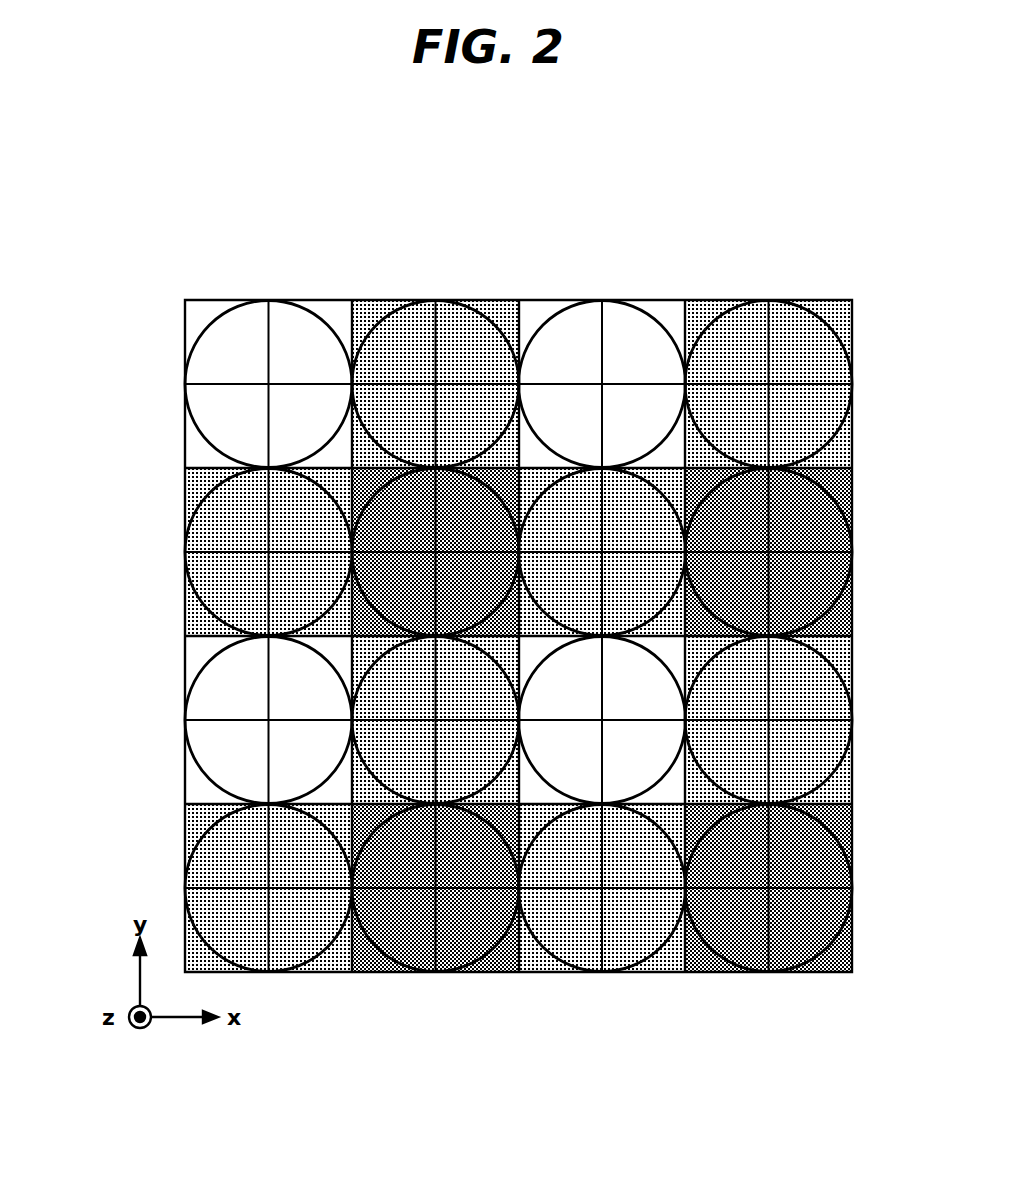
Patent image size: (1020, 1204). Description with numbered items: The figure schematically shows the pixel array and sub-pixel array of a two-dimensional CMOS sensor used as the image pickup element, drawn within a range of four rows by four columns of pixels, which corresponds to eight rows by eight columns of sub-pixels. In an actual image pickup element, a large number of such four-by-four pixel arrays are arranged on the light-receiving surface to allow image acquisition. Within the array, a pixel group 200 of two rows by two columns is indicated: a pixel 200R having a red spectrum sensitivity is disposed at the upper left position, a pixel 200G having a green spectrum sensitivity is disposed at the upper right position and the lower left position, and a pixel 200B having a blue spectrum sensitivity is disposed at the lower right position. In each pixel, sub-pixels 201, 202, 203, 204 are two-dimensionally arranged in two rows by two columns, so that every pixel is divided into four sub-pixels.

The pixel group 200 is at (88, 355).
The pixel having R (red) spectrum sensitivity 200R is at (215, 353).
The pixel having G (green) spectrum sensitivity 200G is at (232, 487).
The pixel having B (blue) spectrum sensitivity 200B is at (388, 572).
The sub-pixel 201 is at (752, 325).
The sub-pixel 202 is at (795, 327).
The sub-pixel 203 is at (708, 410).
The sub-pixel 204 is at (835, 410).